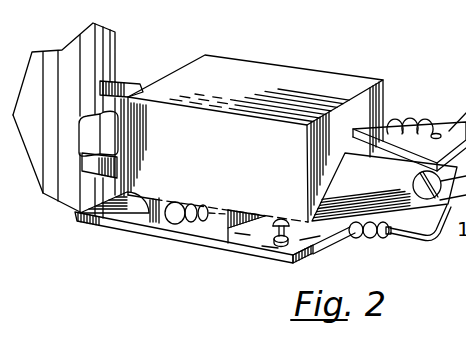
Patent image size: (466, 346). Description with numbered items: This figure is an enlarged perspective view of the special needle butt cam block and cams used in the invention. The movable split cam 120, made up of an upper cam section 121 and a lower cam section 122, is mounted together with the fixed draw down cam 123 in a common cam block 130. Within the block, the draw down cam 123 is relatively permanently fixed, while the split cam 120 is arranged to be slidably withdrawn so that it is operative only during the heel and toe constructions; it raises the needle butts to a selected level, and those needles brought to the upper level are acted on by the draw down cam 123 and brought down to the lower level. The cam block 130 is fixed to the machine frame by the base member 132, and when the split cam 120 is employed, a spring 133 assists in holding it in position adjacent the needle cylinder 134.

The movable split cam 120 is at (378, 193).
The upper cam section 121 is at (85, 138).
The lower cam section 122 is at (93, 165).
The fixed draw down cam 123 is at (120, 82).
The cam block 130 is at (317, 75).
The base member 132 is at (248, 245).
The spring 133 is at (370, 236).
The cylinder 134 is at (112, 52).